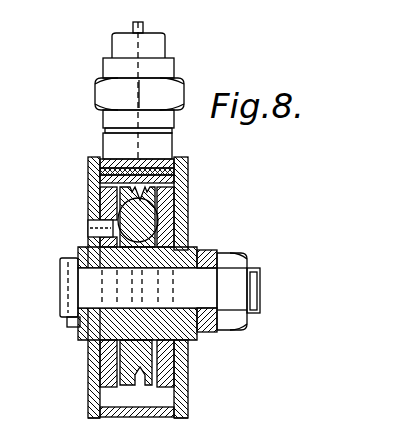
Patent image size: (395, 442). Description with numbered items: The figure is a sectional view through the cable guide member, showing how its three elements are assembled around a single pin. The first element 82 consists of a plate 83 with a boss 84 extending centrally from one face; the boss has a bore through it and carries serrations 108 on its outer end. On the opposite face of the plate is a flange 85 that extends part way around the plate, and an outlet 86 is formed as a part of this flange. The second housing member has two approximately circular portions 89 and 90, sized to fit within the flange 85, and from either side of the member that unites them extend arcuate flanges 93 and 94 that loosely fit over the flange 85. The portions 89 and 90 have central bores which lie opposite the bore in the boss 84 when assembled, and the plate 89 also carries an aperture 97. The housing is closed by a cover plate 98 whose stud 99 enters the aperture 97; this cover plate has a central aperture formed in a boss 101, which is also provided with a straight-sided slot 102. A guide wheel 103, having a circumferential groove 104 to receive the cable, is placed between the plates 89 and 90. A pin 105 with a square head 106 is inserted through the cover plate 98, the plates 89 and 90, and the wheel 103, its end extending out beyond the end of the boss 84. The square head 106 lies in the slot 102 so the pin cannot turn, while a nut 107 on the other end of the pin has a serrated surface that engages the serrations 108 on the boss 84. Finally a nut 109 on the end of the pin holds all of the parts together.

The guide member element 82 is at (196, 178).
The plate 83 is at (183, 205).
The boss 84 is at (195, 248).
The flange 85 is at (88, 176).
The outlet 86 is at (103, 142).
The circular portion 89 is at (88, 200).
The circular portion 90 is at (176, 221).
The arcuate flange 93 is at (152, 166).
The arcuate flange 94 is at (122, 408).
The aperture 97 is at (100, 211).
The cover plate 98 is at (90, 348).
The stud 99 is at (92, 228).
The boss 101 is at (85, 326).
The straight-sided slot 102 is at (70, 322).
The guide wheel 103 is at (147, 353).
The circumferential groove 104 is at (137, 386).
The pin 105 is at (185, 283).
The square head 106 is at (60, 270).
The nut 107 is at (213, 338).
The serrations 108 is at (197, 340).
The nut 109 is at (242, 257).